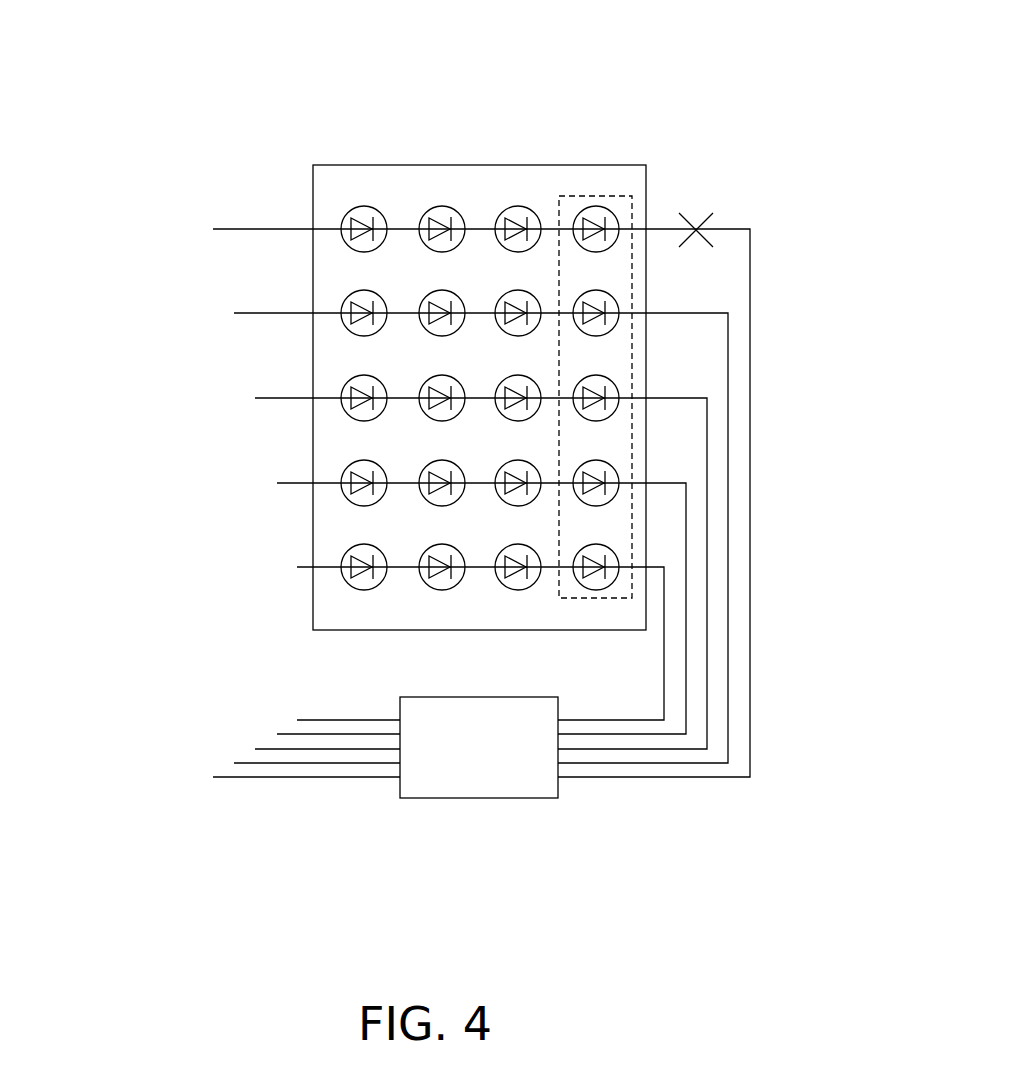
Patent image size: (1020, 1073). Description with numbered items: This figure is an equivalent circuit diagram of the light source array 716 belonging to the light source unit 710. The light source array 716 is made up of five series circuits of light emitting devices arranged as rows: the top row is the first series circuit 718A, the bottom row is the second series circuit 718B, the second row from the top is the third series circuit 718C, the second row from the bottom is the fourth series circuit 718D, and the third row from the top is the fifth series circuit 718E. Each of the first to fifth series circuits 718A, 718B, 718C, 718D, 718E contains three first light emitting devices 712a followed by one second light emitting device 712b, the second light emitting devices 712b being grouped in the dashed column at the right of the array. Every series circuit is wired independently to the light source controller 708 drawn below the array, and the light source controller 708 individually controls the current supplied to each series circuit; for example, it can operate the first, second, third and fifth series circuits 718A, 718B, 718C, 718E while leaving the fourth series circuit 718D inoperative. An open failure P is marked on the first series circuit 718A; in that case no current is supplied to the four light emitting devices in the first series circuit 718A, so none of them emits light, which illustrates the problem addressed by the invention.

The light source controller 708 is at (475, 800).
The light source unit 710 is at (534, 133).
The first light emitting device 712a is at (518, 205).
The second light emitting device 712b is at (600, 205).
The light source array 716 is at (348, 190).
The first series circuit 718A is at (256, 224).
The second series circuit 718B is at (298, 561).
The third series circuit 718C is at (256, 307).
The fourth series circuit 718D is at (284, 477).
The fifth series circuit 718E is at (269, 392).
The open failure P is at (696, 206).